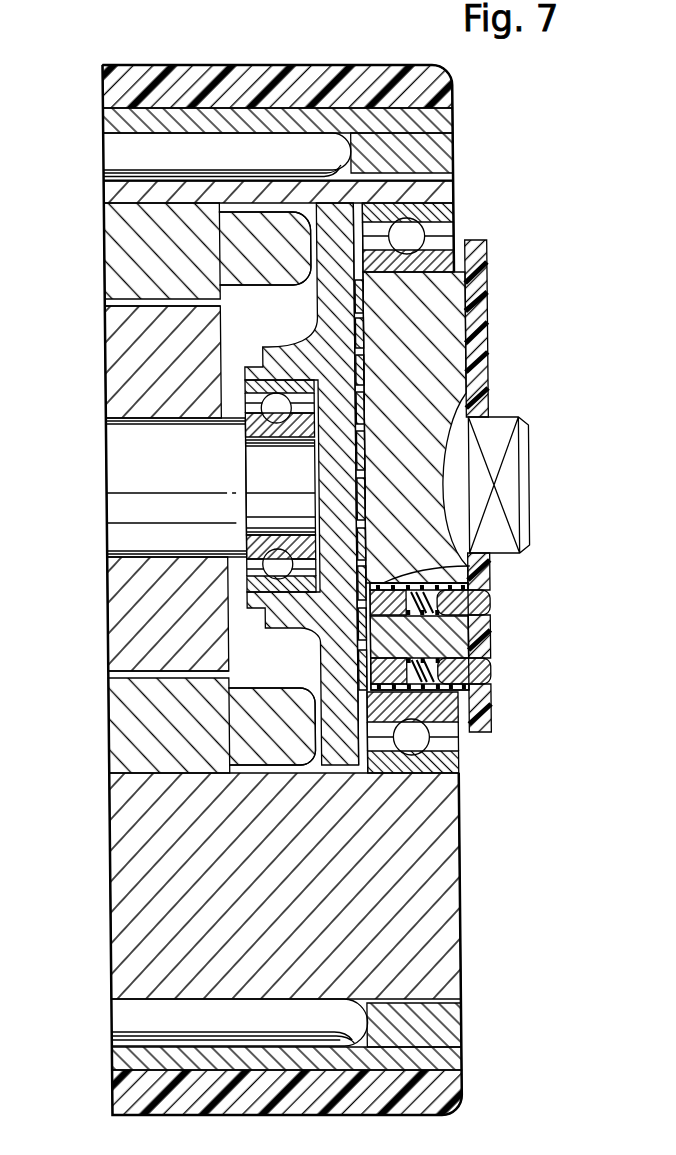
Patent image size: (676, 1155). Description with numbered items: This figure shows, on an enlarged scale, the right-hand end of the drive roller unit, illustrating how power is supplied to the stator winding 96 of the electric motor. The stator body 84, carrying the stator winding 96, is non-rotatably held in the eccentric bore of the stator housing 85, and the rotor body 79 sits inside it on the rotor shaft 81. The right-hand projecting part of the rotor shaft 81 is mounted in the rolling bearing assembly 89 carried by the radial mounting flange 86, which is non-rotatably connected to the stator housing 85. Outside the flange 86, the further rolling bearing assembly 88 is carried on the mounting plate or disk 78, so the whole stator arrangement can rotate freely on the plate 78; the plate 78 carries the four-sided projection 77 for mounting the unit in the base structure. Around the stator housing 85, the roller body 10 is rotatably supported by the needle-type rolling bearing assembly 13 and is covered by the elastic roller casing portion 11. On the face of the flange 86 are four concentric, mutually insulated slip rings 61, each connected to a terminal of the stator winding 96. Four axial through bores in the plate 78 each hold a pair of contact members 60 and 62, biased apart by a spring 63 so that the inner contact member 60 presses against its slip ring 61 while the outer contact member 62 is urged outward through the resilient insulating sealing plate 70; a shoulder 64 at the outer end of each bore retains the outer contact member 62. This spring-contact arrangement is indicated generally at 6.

The spring assembly 6 is at (507, 658).
The roller body 10 is at (193, 122).
The roller casing portion 11 is at (259, 88).
The rolling bearing assembly 13 is at (130, 152).
The contact member 60 is at (491, 570).
The slip rings 61 is at (366, 334).
The outer contact member 62 is at (491, 600).
The spring 63 is at (442, 654).
The shoulder 64 is at (472, 586).
The insulating sealing plate 70 is at (483, 309).
The projection 77 is at (505, 429).
The mounting plate or disk 78 is at (458, 359).
The rotor body 79 is at (121, 367).
The rotor shaft 81 is at (121, 477).
The stator body 84 is at (121, 269).
The stator housing 85 is at (115, 195).
The mounting flange 86 is at (341, 217).
The rolling bearing assembly 88 is at (455, 227).
The rolling bearing assembly 89 is at (257, 370).
The stator winding 96 is at (272, 266).